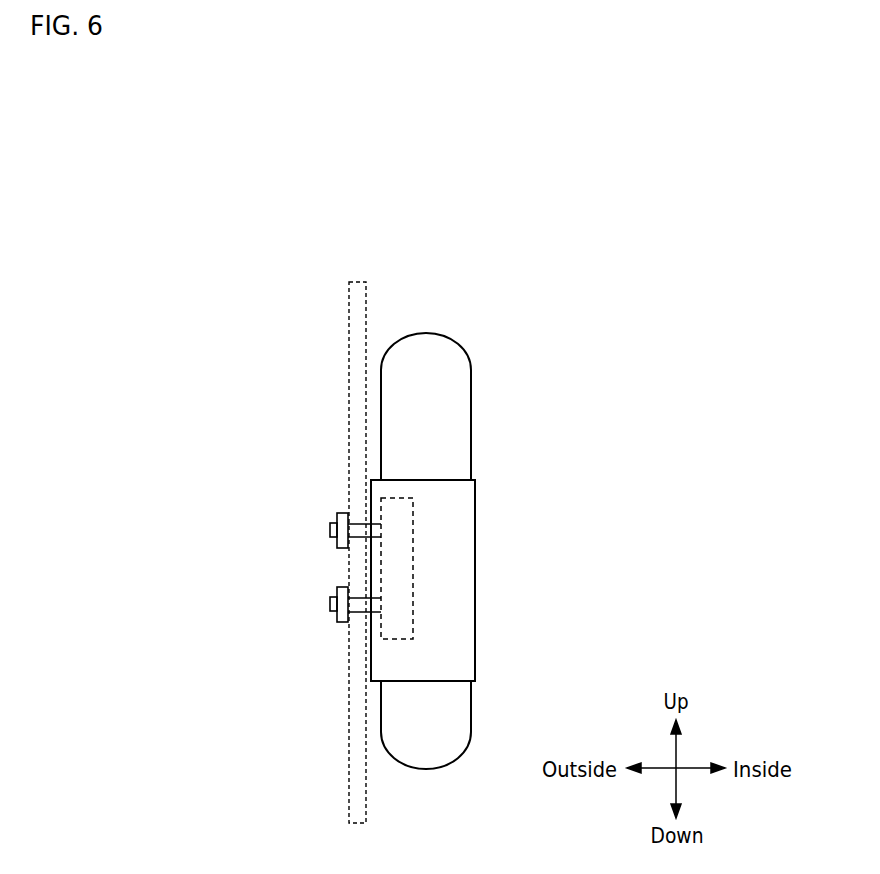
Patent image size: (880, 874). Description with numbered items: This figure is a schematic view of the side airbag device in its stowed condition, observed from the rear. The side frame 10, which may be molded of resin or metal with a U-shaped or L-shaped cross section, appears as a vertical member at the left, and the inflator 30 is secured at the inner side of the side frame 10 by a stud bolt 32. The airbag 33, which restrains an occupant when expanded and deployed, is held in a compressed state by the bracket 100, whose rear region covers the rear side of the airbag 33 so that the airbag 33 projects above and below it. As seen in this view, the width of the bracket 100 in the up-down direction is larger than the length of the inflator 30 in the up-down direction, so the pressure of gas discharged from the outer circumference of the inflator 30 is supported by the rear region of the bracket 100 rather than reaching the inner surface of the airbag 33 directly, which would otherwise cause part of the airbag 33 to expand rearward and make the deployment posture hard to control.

The side frame 10 is at (367, 285).
The inflator 30 is at (413, 509).
The stud bolt 32 is at (330, 530).
The airbag 33 is at (460, 387).
The bracket 100 is at (463, 551).